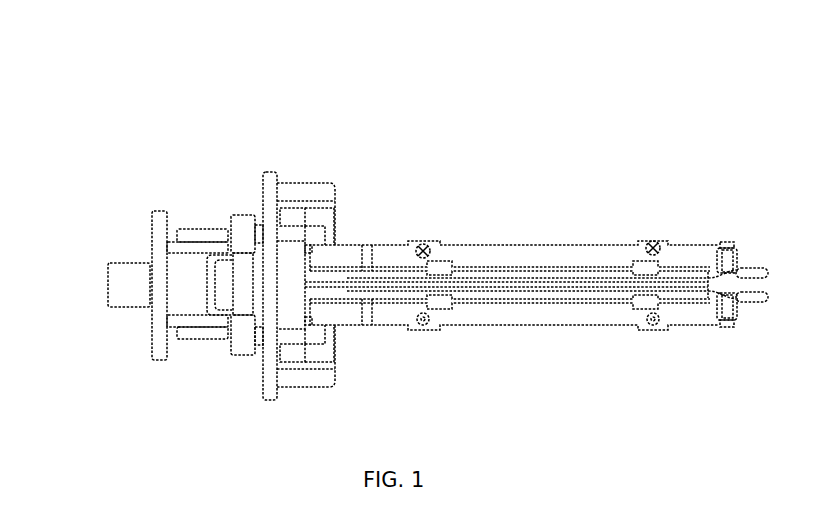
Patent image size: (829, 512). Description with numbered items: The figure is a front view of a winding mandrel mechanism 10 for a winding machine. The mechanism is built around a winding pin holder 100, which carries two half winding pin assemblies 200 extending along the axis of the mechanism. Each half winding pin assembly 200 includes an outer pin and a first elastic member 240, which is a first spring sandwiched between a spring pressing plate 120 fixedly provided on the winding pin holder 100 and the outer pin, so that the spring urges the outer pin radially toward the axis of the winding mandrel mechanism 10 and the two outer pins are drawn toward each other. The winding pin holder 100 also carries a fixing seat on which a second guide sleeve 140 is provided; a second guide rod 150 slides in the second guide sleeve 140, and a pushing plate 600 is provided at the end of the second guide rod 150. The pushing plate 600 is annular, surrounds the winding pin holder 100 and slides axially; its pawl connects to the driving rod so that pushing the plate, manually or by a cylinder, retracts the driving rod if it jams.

The winding mandrel mechanism 10 is at (182, 61).
The winding pin holder 100 is at (134, 268).
The spring pressing plate 120 is at (295, 215).
The second guide sleeve 140 is at (227, 338).
The second guide rod 150 is at (195, 337).
The half winding pin assembly 200 is at (627, 242).
The first elastic member 240 is at (322, 230).
The pushing plate 600 is at (272, 178).